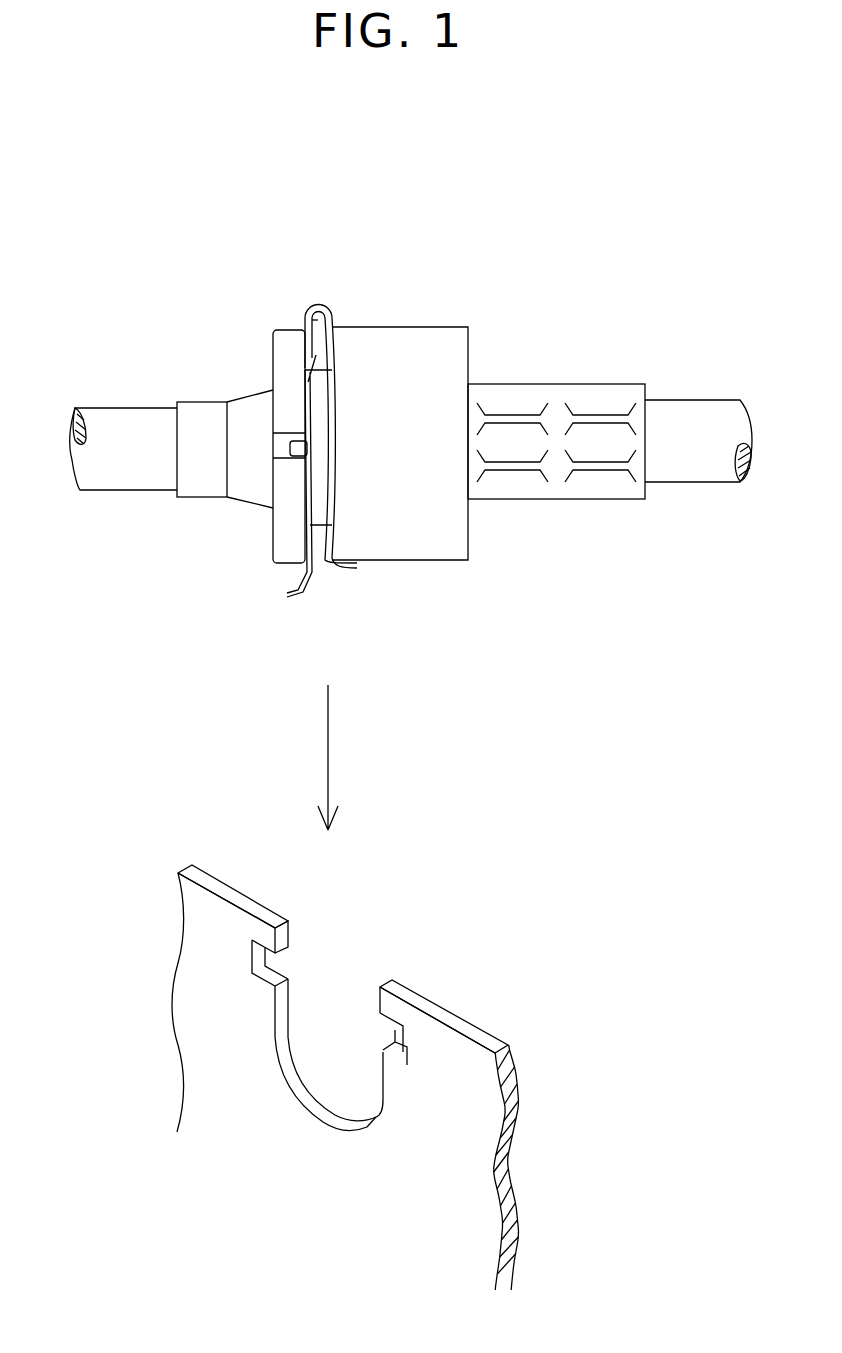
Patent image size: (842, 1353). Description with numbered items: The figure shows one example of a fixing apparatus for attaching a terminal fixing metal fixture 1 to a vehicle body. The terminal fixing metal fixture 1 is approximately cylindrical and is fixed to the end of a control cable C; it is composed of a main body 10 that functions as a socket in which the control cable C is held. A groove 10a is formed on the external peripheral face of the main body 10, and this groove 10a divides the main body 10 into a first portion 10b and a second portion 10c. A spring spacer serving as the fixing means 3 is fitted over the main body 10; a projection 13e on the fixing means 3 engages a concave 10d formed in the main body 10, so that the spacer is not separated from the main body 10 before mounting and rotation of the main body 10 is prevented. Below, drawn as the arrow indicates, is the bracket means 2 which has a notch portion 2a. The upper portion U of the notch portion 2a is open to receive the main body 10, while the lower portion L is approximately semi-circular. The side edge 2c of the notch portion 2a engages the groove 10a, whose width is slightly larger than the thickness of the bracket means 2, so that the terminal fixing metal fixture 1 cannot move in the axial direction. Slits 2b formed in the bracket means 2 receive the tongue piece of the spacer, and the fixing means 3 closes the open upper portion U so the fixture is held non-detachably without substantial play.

The terminal fixing metal fixture 1 is at (414, 302).
The bracket means 2 is at (443, 1113).
The notch portion 2a is at (332, 1027).
The slit 2b is at (270, 960).
The side edge 2c is at (303, 1087).
The fixing means 3 is at (307, 571).
The main body 10 is at (410, 218).
The groove 10a is at (322, 572).
The first portion 10b is at (290, 338).
The second portion 10c is at (360, 338).
The concave 10d is at (275, 443).
The projection 13e is at (281, 455).
The control cable C is at (583, 396).
The upper portion U is at (281, 938).
The lower portion L is at (275, 1037).